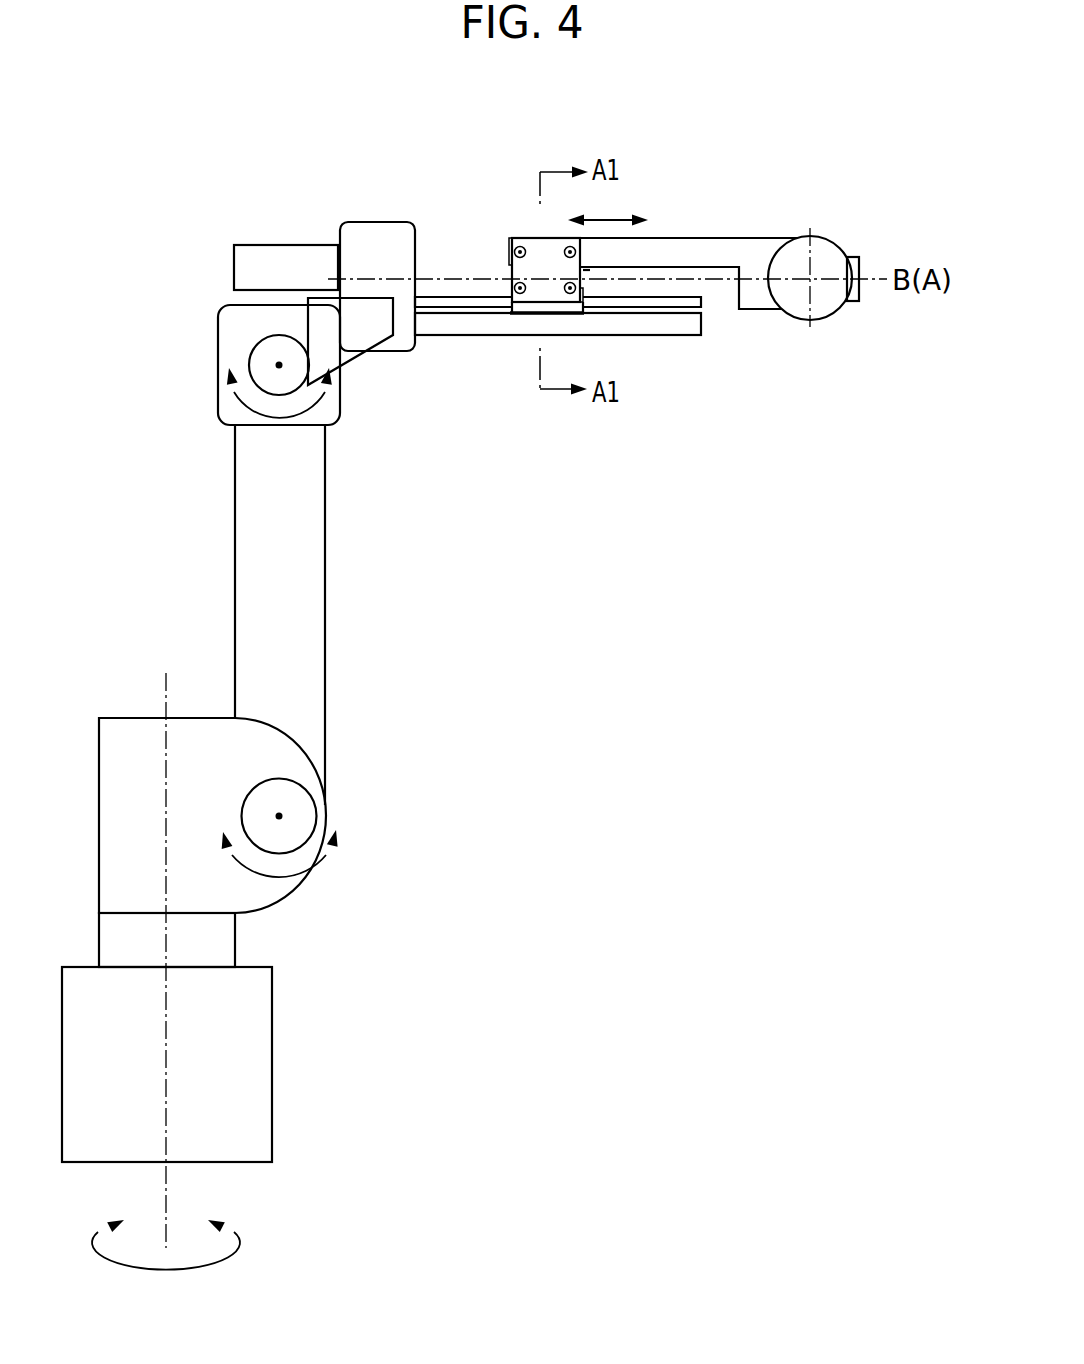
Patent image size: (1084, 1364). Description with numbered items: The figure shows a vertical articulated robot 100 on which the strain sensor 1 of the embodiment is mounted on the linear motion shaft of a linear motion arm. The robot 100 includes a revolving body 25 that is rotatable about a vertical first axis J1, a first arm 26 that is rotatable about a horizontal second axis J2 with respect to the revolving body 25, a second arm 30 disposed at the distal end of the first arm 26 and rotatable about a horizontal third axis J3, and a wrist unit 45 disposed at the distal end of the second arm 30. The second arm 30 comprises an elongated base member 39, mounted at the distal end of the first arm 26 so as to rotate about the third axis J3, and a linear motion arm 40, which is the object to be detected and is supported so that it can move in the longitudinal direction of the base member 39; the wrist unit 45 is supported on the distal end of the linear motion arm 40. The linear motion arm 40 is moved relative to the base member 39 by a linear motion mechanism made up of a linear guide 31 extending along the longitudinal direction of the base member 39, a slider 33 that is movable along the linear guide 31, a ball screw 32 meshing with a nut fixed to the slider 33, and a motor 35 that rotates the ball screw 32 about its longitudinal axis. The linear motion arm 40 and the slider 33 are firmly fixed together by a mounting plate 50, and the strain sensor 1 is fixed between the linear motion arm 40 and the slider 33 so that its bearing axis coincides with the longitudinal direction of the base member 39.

The robot 100 is at (128, 218).
The strain sensor 1 is at (535, 238).
The revolving body 25 is at (236, 935).
The first arm 26 is at (327, 575).
The second arm 30 is at (795, 165).
The linear guide 31 is at (690, 336).
The ball screw 32 is at (701, 303).
The slider 33 is at (520, 315).
The motor 35 is at (275, 245).
The base member 39 is at (460, 353).
The linear motion arm 40 is at (710, 228).
The wrist unit 45 is at (841, 232).
The mounting plate 50 is at (583, 270).
The first axis J1 is at (166, 1265).
The second axis J2 is at (282, 875).
The third axis J3 is at (279, 427).